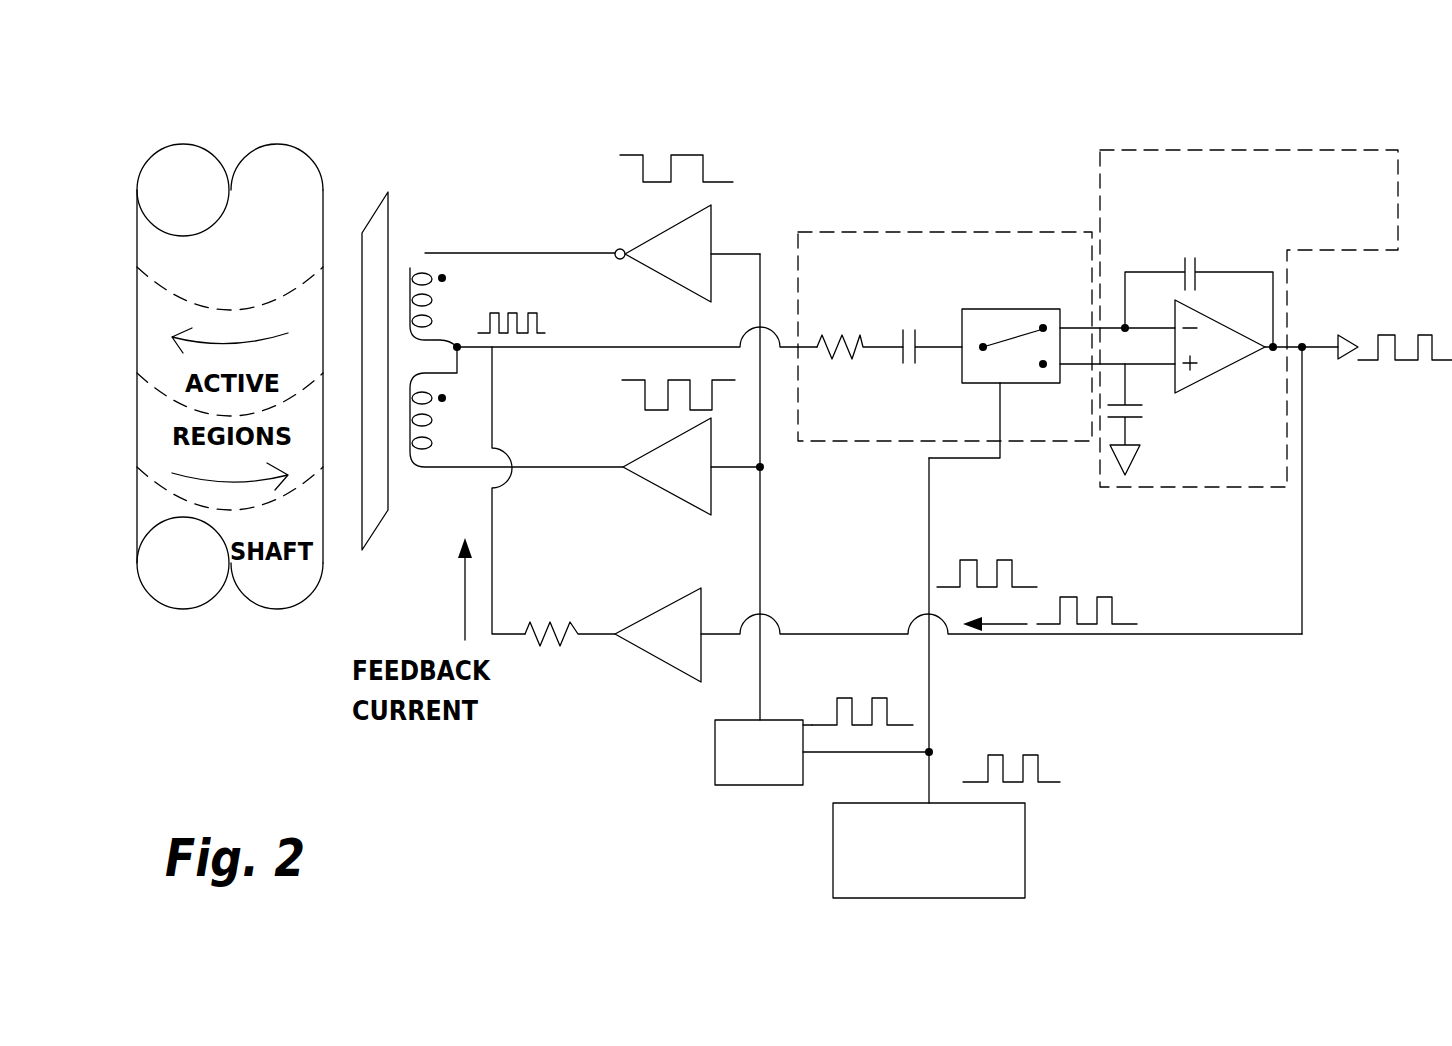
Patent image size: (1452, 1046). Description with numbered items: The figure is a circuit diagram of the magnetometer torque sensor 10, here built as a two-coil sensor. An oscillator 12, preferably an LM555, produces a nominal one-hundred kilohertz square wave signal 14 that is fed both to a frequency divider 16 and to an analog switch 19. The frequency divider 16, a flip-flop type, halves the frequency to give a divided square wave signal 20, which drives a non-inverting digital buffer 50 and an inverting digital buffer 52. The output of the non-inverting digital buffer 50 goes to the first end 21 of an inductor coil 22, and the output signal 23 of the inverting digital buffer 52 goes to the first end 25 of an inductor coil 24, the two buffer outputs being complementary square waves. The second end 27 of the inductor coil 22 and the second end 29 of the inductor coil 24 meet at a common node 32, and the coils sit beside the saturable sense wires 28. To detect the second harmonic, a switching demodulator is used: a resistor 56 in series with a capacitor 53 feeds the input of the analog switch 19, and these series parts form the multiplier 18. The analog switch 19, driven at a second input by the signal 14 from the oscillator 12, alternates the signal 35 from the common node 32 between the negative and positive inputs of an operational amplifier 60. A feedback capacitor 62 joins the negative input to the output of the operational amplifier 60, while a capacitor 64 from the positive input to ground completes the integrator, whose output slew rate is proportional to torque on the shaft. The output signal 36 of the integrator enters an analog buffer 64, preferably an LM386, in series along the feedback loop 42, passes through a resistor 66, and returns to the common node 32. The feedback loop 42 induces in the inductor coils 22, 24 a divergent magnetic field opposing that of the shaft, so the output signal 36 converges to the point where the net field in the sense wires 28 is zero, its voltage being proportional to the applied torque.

The magnetometer torque sensor 10 is at (1312, 793).
The oscillator 12 is at (990, 900).
The square wave signal 14 is at (998, 755).
The frequency divider 16 is at (714, 757).
The multiplier 18 is at (833, 232).
The analog switch 19 is at (960, 333).
The divided square wave signal 20 is at (622, 374).
The first end of inductor coil 21 is at (447, 467).
The inductor coil 22 is at (407, 413).
The output signal of inverting digital buffer 23 is at (680, 155).
The inductor coil 24 is at (413, 302).
The first end of inductor coil 25 is at (410, 268).
The second end of inductor coil 27 is at (457, 360).
The sense wires 28 is at (378, 190).
The second end of inductor coil 29 is at (458, 274).
The common node 32 is at (457, 345).
The signal from common node 35 is at (512, 312).
The output signal 36 is at (1373, 360).
The feedback loop 42 is at (1277, 555).
The non-inverting digital buffer 50 is at (652, 485).
The inverting digital buffer 52 is at (713, 238).
The coupling capacitor 53 is at (903, 352).
The resistor 56 is at (827, 338).
The operational amplifier 60 is at (1233, 363).
The feedback capacitor 62 is at (1183, 263).
The capacitor / analog buffer 64 is at (646, 618).
The resistor 66 is at (548, 622).